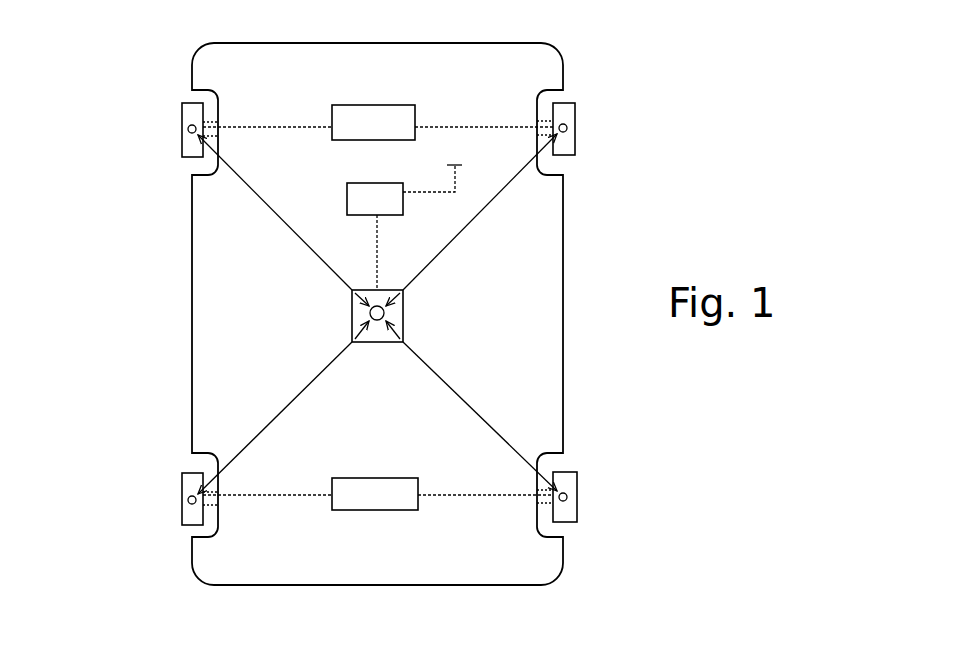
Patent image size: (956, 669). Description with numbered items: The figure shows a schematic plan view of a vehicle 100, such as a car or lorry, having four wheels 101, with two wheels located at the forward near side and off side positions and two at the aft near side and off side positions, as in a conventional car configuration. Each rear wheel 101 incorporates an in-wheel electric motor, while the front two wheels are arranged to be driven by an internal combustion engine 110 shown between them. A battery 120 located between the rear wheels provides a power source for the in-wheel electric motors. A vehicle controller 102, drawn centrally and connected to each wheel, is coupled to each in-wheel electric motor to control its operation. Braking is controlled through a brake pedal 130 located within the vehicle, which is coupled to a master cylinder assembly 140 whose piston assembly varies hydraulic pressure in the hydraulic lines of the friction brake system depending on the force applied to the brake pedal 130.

The vehicle 100 is at (694, 423).
The wheels 101 is at (182, 110).
The vehicle controller 102 is at (402, 317).
The internal combustion engine 110 is at (370, 105).
The battery 120 is at (378, 478).
The brake pedal 130 is at (460, 177).
The master cylinder assembly 140 is at (360, 183).